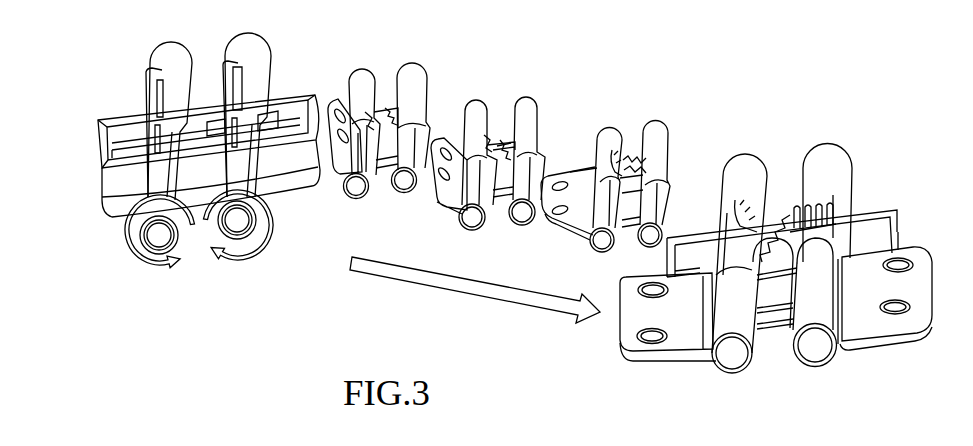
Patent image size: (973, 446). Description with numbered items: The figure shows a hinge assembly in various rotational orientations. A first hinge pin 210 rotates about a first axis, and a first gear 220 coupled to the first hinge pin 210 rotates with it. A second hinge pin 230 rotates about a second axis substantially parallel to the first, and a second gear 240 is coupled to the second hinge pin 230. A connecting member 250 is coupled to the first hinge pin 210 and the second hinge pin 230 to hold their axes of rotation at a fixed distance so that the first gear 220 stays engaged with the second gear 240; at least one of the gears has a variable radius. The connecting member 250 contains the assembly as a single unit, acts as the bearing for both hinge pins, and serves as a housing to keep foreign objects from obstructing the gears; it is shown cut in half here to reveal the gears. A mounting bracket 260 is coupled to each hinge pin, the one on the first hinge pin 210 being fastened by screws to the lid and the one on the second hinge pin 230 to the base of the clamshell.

The first hinge pin 210 is at (153, 240).
The first gear 220 is at (367, 120).
The second hinge pin 230 is at (240, 222).
The second gear 240 is at (392, 112).
The connecting member 250 is at (122, 188).
The mounting bracket 260 is at (903, 328).